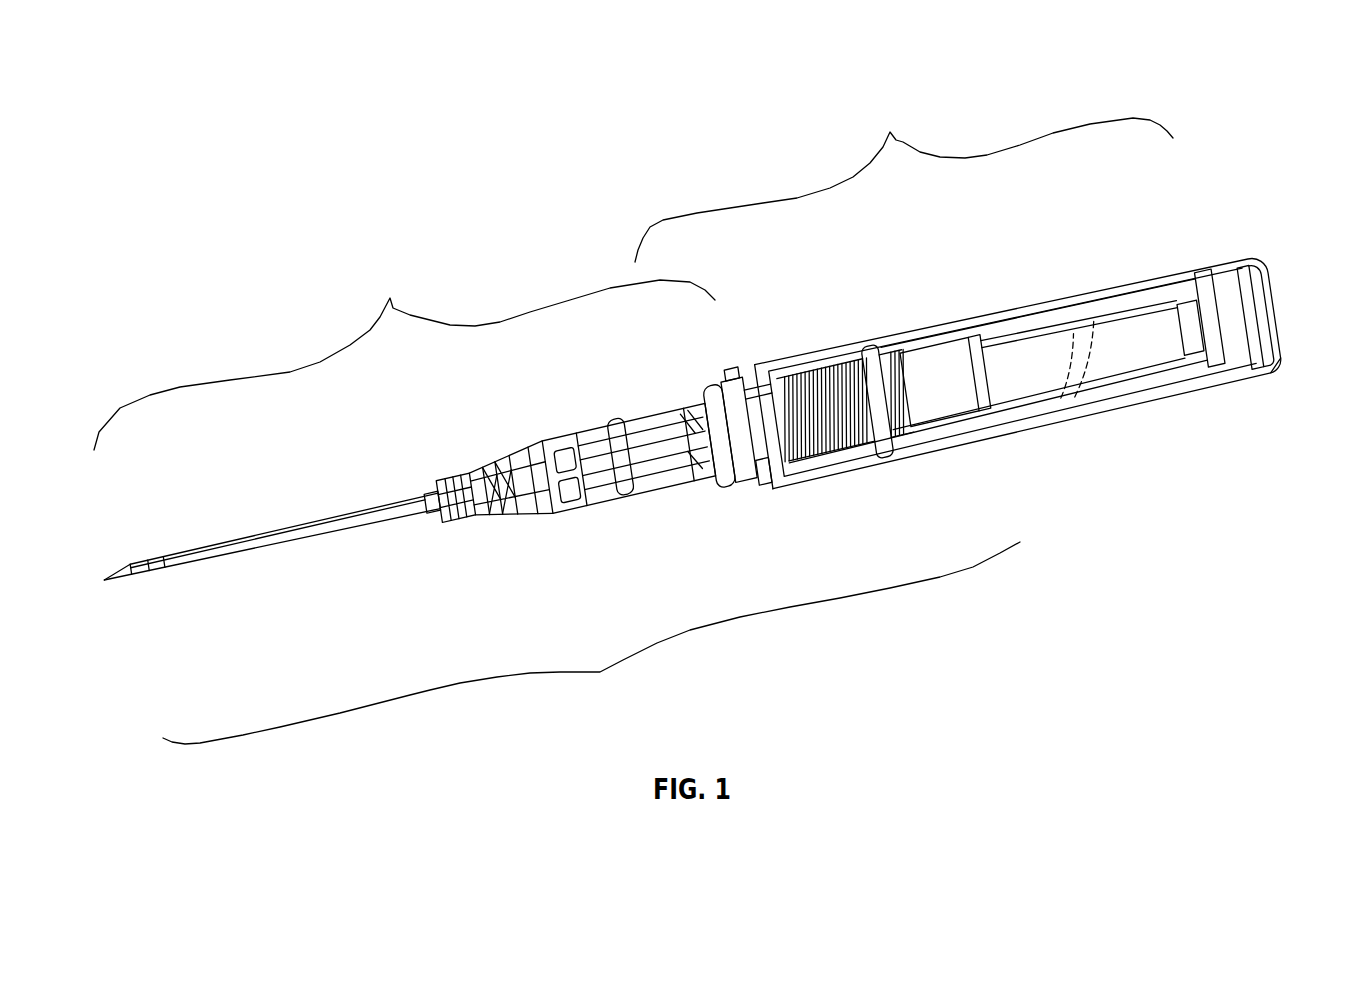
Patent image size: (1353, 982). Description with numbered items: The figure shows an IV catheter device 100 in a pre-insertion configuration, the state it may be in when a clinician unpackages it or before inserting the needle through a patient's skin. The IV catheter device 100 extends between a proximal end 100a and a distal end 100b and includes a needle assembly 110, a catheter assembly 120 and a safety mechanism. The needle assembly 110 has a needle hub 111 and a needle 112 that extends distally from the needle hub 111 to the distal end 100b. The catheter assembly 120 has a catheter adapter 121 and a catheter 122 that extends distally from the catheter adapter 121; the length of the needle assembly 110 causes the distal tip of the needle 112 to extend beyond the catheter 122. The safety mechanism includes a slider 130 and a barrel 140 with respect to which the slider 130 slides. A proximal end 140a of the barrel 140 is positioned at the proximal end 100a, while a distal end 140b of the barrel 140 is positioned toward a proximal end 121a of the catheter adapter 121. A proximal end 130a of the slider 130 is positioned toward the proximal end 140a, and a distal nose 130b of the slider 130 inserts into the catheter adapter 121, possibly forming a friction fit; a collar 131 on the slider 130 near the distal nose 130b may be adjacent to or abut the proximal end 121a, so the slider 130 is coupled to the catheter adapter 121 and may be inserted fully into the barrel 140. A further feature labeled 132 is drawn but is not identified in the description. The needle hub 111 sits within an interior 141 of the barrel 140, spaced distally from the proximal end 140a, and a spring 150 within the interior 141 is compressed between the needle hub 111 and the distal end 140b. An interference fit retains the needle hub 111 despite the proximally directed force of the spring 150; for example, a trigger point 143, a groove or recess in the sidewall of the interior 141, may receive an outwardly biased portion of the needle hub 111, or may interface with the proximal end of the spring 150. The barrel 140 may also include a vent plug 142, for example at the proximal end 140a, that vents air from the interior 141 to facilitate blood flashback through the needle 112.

The IV catheter device 100 is at (191, 311).
The proximal end 100a is at (1232, 228).
The distal end 100b is at (130, 610).
The needle assembly 110 is at (600, 672).
The needle hub 111 is at (960, 400).
The needle 112 is at (112, 572).
The catheter assembly 120 is at (390, 298).
The catheter adapter 121 is at (590, 424).
The proximal end 121a is at (721, 490).
The catheter 122 is at (316, 522).
The slider 130 is at (890, 132).
The proximal end 130a is at (1198, 283).
The distal nose 130b is at (691, 413).
The collar 131 is at (752, 484).
The tab 132 is at (731, 374).
The barrel 140 is at (1130, 402).
The proximal end 140a is at (1270, 380).
The distal end 140b is at (778, 474).
The interior 141 is at (1052, 402).
The vent plug 142 is at (1278, 312).
The trigger point 143 is at (873, 343).
The spring 150 is at (797, 452).